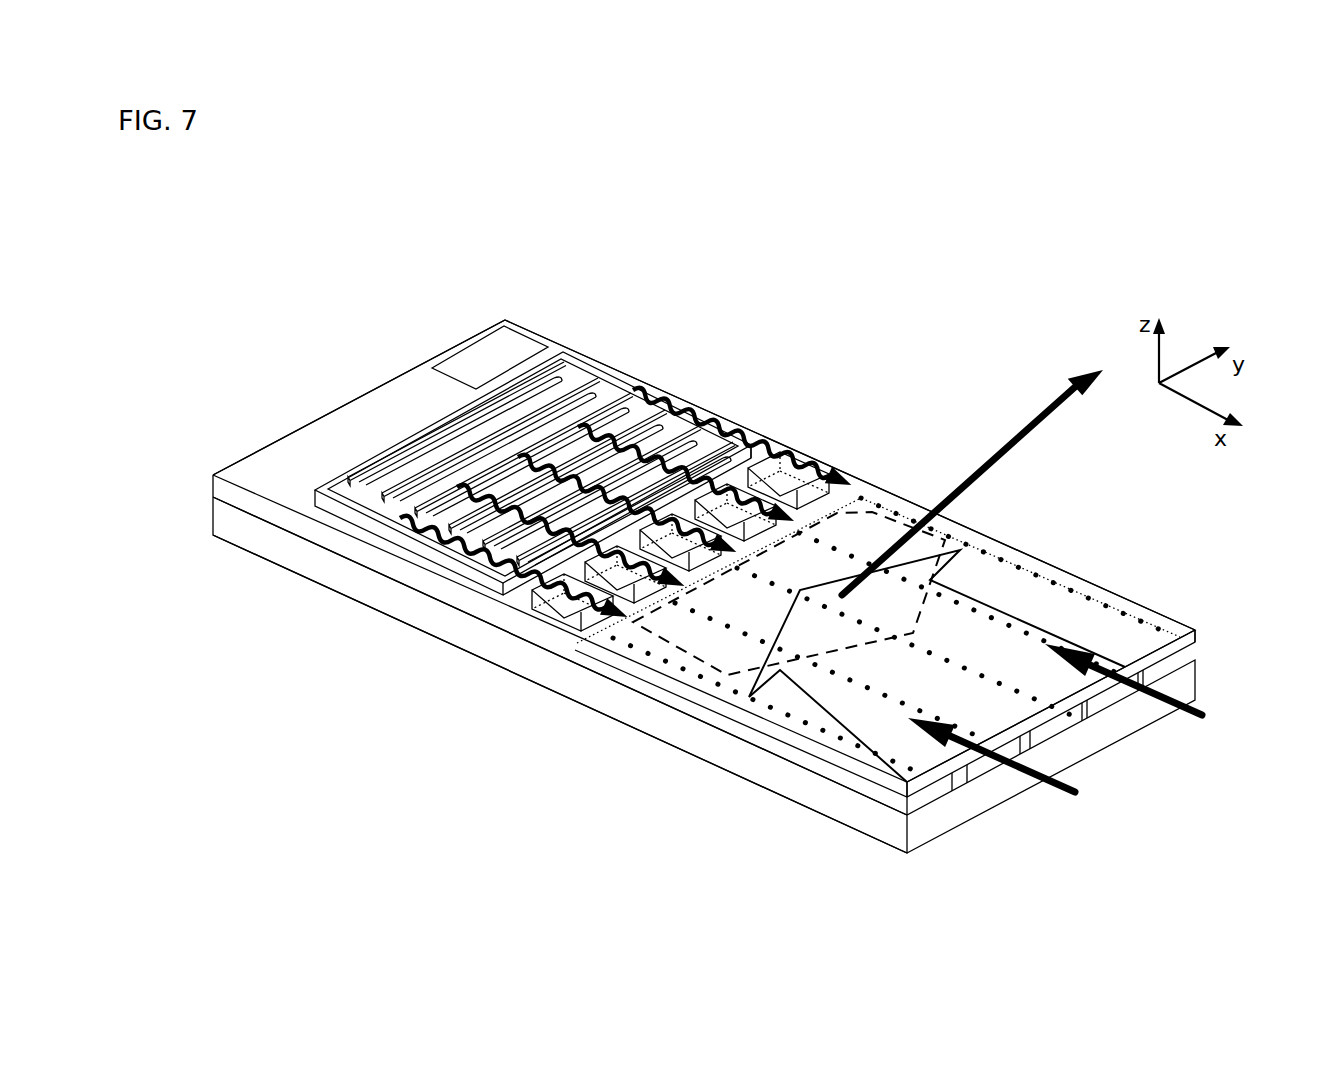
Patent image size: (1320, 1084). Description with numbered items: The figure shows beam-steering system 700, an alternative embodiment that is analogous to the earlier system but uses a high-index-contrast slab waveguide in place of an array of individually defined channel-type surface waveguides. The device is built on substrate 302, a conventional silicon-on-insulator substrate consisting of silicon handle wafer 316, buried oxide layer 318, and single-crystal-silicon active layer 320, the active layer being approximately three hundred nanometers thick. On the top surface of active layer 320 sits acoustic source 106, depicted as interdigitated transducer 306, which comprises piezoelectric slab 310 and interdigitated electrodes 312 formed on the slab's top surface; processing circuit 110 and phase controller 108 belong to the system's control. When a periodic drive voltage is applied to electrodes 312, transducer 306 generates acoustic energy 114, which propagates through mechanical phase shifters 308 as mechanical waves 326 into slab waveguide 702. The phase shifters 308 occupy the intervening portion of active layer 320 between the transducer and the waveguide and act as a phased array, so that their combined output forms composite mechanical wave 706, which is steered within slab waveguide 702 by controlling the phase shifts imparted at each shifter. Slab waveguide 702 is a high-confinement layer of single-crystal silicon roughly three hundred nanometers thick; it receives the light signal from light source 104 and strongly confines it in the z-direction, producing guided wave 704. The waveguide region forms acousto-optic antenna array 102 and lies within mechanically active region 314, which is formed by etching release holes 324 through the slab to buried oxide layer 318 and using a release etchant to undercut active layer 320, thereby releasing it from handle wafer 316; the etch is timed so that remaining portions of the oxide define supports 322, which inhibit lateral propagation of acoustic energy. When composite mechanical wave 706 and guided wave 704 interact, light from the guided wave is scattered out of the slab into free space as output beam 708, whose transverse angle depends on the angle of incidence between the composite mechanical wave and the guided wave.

The beam-steering system 700 is at (196, 272).
The substrate 302 is at (200, 475).
The active layer 320 is at (236, 472).
The buried oxide layer 318 is at (308, 530).
The silicon handle wafer 316 is at (360, 590).
The acoustic source 106 is at (624, 338).
The processing circuit 110 is at (490, 360).
The interdigitated transducer 306 is at (692, 388).
The piezoelectric slab 310 is at (315, 487).
The interdigitated electrodes 312 is at (428, 426).
The mechanical phase shifters 308 is at (535, 615).
The mechanical waves 326 is at (748, 447).
The acoustic energy 114 is at (792, 428).
The phase controller 108 is at (824, 435).
The slab waveguide 702 is at (795, 735).
The supports 322 is at (905, 795).
The release holes 324 is at (630, 645).
The composite mechanical wave 706 is at (700, 652).
The guided wave 704 is at (985, 603).
The acousto-optic antenna array 102 is at (995, 522).
The mechanically active region 314 is at (1160, 562).
The output beam 708 is at (975, 470).
The light source 104 is at (1095, 761).